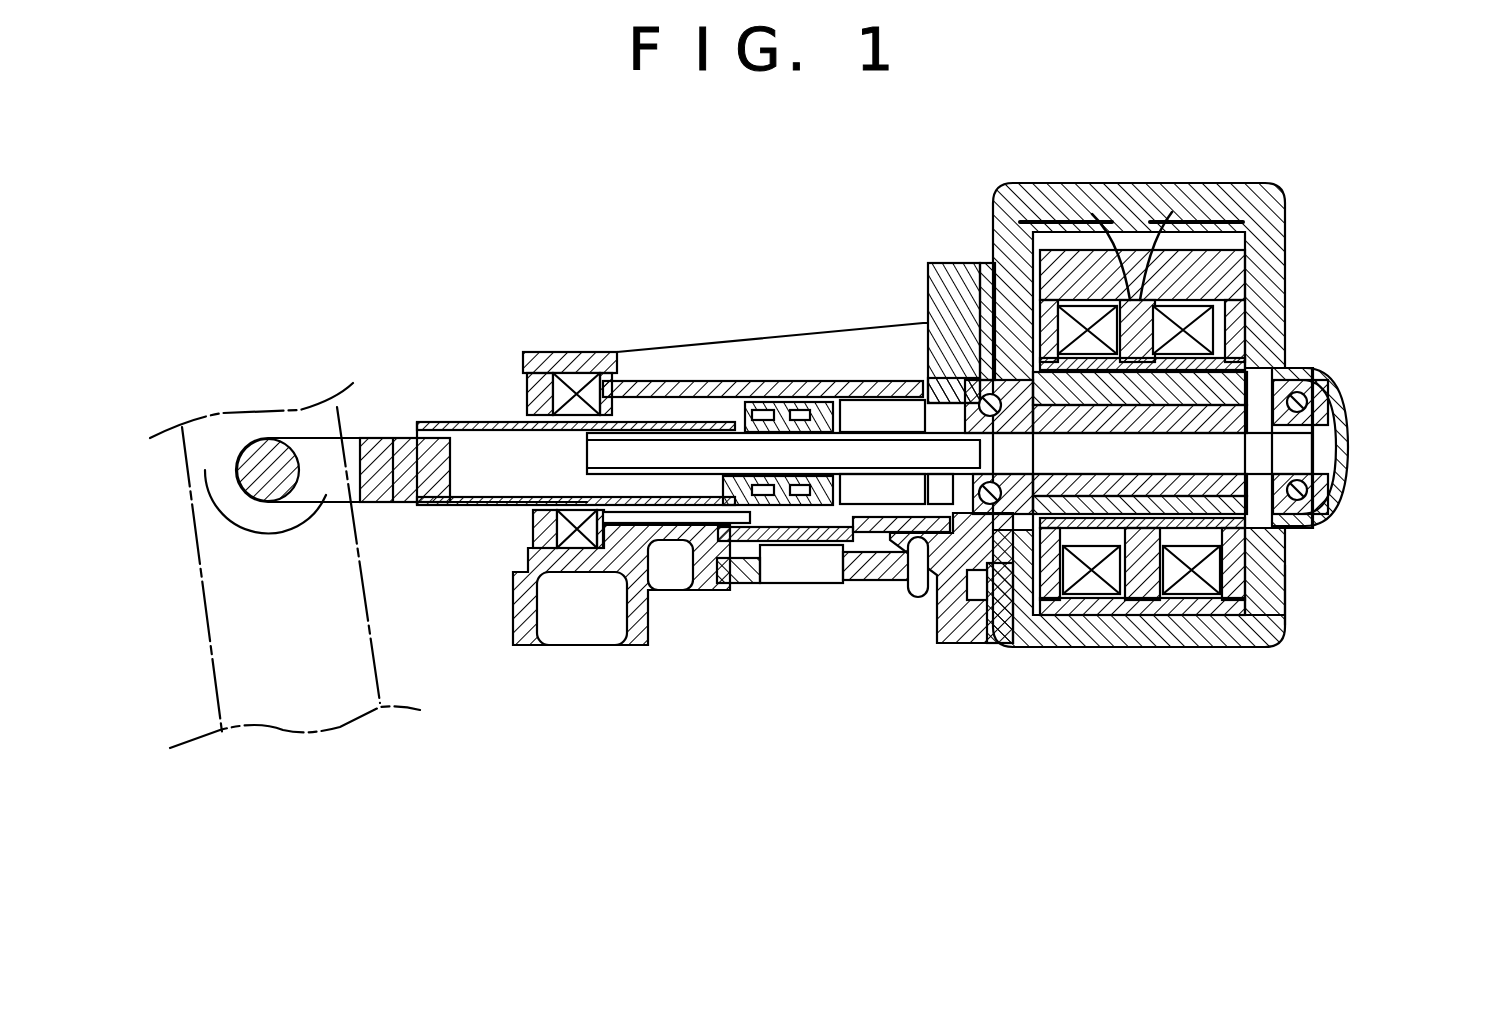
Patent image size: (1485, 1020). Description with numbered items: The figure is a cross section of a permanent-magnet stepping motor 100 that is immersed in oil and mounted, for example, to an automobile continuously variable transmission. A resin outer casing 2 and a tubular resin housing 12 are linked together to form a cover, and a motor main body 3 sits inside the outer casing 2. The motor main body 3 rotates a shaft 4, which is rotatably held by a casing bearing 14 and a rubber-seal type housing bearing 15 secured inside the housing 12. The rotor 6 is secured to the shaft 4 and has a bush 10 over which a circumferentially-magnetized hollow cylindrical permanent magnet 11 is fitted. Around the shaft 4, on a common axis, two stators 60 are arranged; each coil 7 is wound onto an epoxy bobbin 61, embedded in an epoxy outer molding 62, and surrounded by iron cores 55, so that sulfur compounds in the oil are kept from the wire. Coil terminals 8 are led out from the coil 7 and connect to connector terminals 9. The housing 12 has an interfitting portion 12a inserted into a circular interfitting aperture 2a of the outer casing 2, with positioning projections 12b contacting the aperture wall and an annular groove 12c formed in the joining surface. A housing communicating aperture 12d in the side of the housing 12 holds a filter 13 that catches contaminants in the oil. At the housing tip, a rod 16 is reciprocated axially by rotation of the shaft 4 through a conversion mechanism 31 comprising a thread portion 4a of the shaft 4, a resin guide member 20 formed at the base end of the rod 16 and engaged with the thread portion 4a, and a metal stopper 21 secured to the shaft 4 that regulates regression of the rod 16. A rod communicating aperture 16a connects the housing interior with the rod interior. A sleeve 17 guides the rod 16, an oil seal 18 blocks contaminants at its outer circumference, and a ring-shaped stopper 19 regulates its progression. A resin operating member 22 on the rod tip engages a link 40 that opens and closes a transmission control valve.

The stepping motor 100 is at (1367, 139).
The outer casing 2 is at (1285, 210).
The interfitting aperture 2a is at (930, 385).
The motor main body 3 is at (1280, 262).
The shaft 4 is at (1283, 453).
The thread portion 4a is at (862, 440).
The rotor 6 is at (1256, 402).
The coil 7 is at (1210, 330).
The coil terminal 8 is at (1120, 212).
The connector terminal 9 is at (1198, 210).
The bush 10 is at (1290, 562).
The permanent magnet 11 is at (1262, 635).
The housing 12 is at (553, 343).
The interfitting portion 12a is at (983, 262).
The positioning projection 12b is at (948, 642).
The annular groove 12c is at (952, 340).
The housing communicating aperture 12d is at (810, 565).
The filter 13 is at (770, 570).
The casing bearing 14 is at (1320, 365).
The housing bearing 15 is at (1045, 625).
The rod 16 is at (481, 420).
The rod communicating aperture 16a is at (700, 385).
The sleeve 17 is at (522, 530).
The oil seal 18 is at (580, 560).
The stopper 19 is at (605, 570).
The guide member 20 is at (812, 420).
The stopper 21 is at (888, 395).
The operating member 22 is at (391, 436).
The conversion mechanism 31 is at (712, 420).
The link 40 is at (320, 417).
The core 55 is at (1140, 640).
The stator 60 is at (1190, 622).
The bobbin 61 is at (1240, 632).
The outer molding 62 is at (1158, 640).